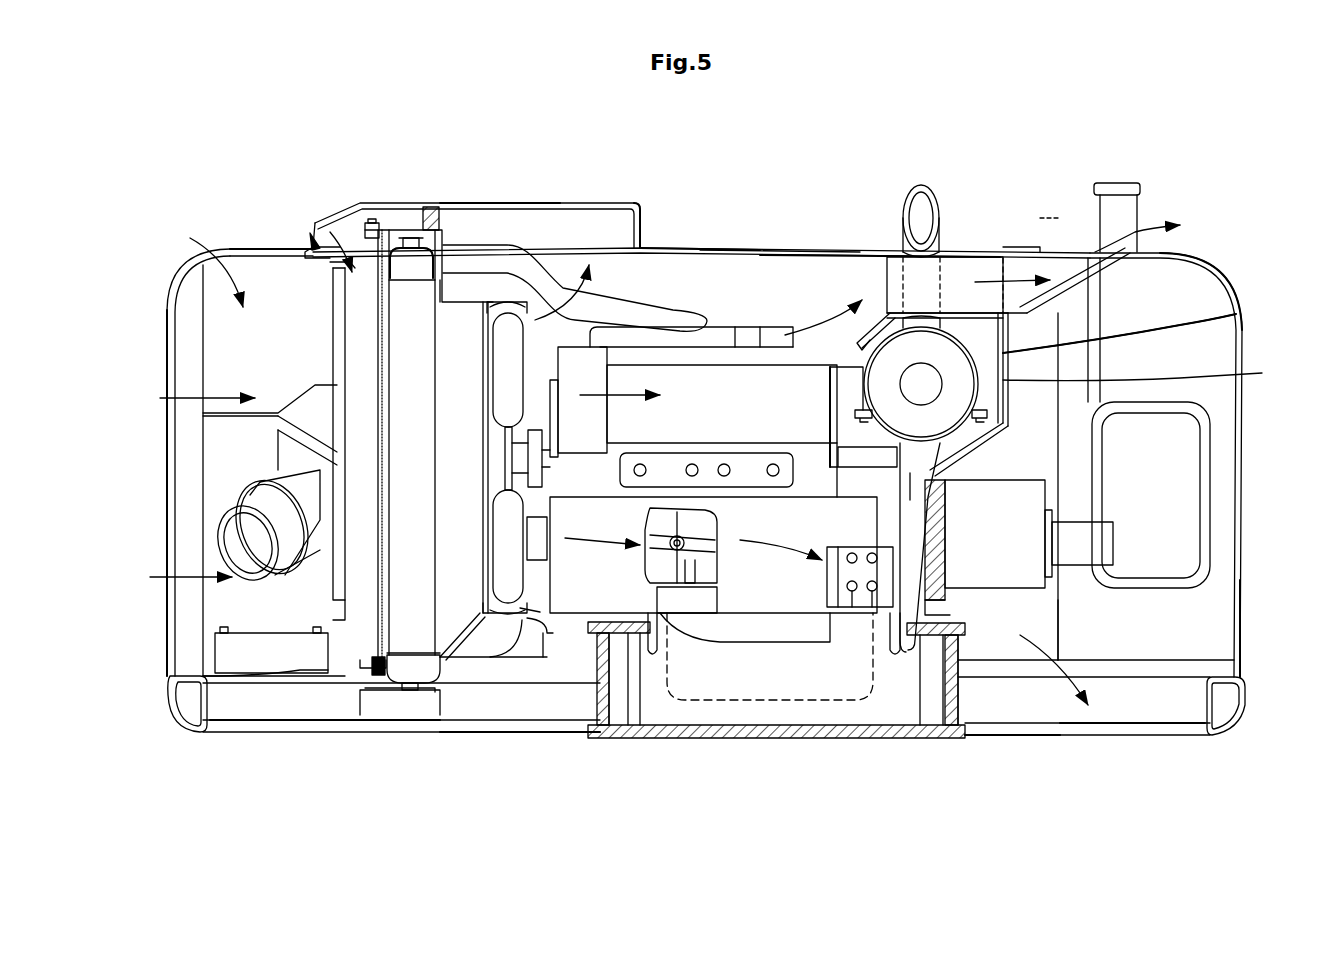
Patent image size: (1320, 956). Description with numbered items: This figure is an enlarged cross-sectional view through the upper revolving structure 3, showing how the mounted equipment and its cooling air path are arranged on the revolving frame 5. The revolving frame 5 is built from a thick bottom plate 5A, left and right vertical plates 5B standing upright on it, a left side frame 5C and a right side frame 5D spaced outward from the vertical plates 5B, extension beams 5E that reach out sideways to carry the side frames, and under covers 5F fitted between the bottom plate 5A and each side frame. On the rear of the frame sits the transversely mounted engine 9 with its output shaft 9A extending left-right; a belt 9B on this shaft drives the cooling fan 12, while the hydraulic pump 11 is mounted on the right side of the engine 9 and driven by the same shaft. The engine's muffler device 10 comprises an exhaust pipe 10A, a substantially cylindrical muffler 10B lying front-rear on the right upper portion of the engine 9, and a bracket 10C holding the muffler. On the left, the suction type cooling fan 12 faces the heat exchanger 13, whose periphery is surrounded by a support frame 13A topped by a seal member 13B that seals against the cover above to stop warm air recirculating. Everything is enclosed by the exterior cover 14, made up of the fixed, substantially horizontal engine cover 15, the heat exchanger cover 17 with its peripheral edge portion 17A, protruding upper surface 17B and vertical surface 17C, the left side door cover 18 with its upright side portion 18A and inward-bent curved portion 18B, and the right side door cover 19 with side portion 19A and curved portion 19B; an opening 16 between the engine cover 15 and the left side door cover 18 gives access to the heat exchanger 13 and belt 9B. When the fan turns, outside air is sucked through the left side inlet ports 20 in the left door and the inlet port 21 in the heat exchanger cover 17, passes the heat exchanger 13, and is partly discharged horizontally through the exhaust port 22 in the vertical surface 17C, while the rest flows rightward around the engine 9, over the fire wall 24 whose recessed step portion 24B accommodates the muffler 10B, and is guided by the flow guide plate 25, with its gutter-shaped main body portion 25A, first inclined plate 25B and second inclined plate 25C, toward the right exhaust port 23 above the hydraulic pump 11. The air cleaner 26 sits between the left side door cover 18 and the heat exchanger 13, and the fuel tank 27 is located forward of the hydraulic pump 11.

The upper revolving structure 3 is at (775, 230).
The revolving frame 5 is at (740, 738).
The bottom plate 5A is at (830, 738).
The vertical plate 5B is at (595, 680).
The left side frame 5C is at (185, 728).
The right side frame 5D is at (1238, 714).
The extension beam 5E is at (292, 705).
The under cover 5F is at (465, 722).
The engine 9 is at (733, 328).
The output shaft 9A is at (546, 560).
The belt 9B is at (522, 625).
The muffler device 10 is at (962, 378).
The exhaust pipe 10A is at (850, 378).
The muffler 10B is at (994, 300).
The bracket 10C is at (900, 655).
The hydraulic pump 11 is at (1030, 497).
The cooling fan 12 is at (510, 335).
The heat exchanger 13 is at (414, 236).
The support frame 13A is at (408, 255).
The seal member 13B is at (432, 258).
The exterior cover 14 is at (791, 238).
The engine cover 15 is at (884, 328).
The opening 16 is at (585, 312).
The heat exchanger cover 17 is at (569, 198).
The peripheral edge portion 17A is at (655, 245).
The protruding upper surface 17B is at (505, 201).
The vertical surface 17C is at (644, 242).
The left side door cover 18 is at (175, 503).
The side portion 18A is at (172, 372).
The curved portion 18B is at (232, 250).
The right side door cover 19 is at (1244, 437).
The side portion 19A is at (1246, 578).
The curved portion 19B is at (1226, 275).
The left side inlet port 20 is at (186, 242).
The inlet port 21 is at (325, 230).
The exhaust port 22 is at (648, 245).
The right exhaust port 23 is at (1042, 250).
The fire wall 24 is at (1262, 373).
The recessed step portion 24B is at (1237, 314).
The flow guide plate 25 is at (950, 357).
The main body portion 25A is at (1060, 250).
The first inclined plate 25B is at (858, 322).
The second inclined plate 25C is at (1098, 242).
The air cleaner 26 is at (235, 540).
The fuel tank 27 is at (1225, 478).